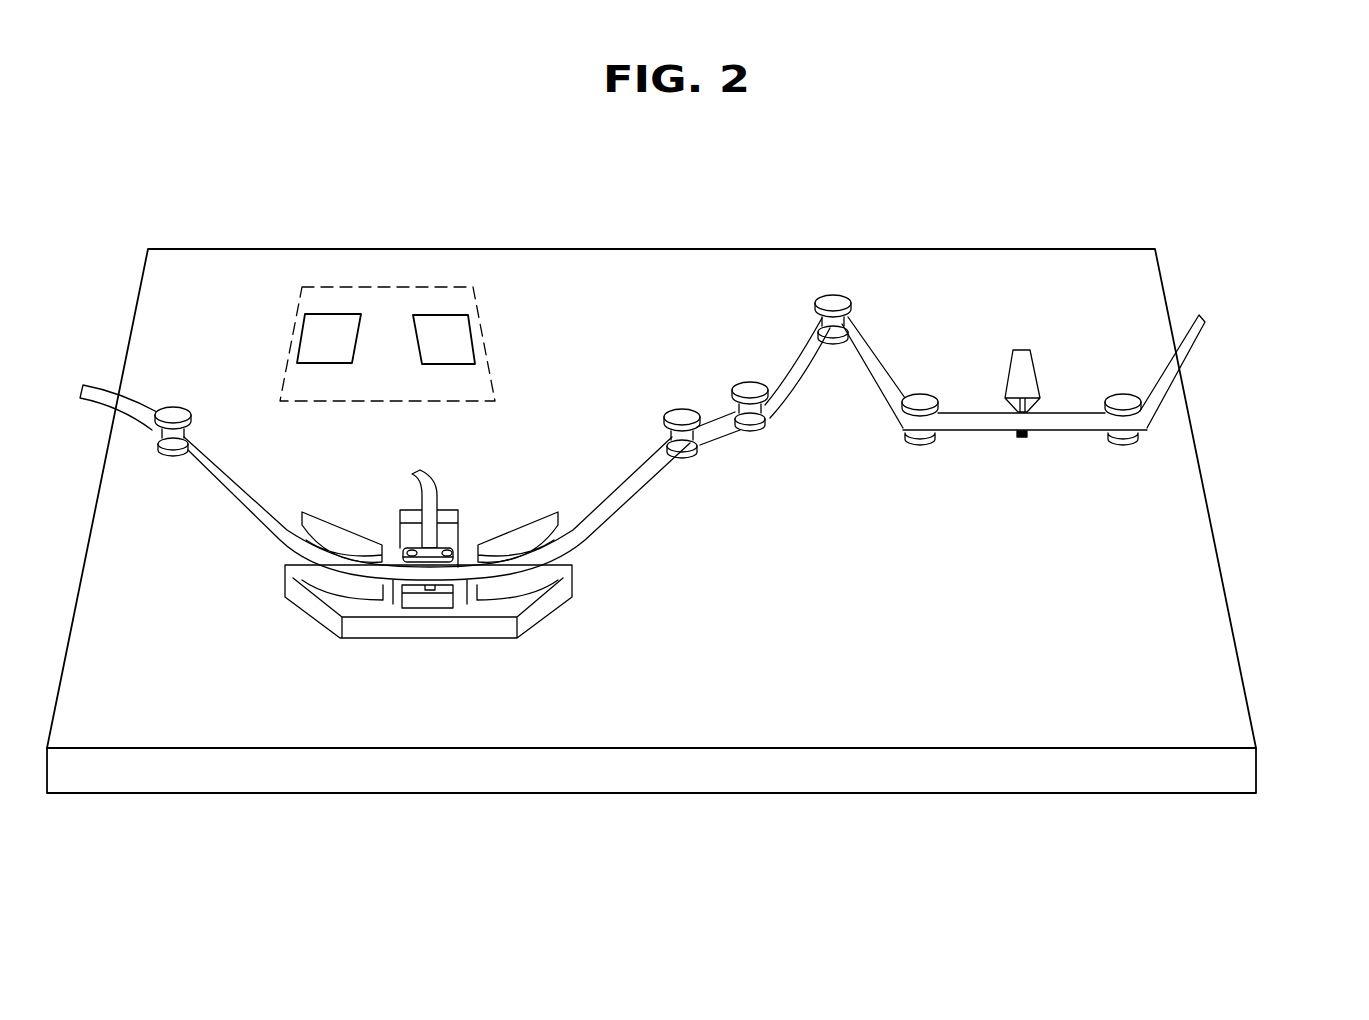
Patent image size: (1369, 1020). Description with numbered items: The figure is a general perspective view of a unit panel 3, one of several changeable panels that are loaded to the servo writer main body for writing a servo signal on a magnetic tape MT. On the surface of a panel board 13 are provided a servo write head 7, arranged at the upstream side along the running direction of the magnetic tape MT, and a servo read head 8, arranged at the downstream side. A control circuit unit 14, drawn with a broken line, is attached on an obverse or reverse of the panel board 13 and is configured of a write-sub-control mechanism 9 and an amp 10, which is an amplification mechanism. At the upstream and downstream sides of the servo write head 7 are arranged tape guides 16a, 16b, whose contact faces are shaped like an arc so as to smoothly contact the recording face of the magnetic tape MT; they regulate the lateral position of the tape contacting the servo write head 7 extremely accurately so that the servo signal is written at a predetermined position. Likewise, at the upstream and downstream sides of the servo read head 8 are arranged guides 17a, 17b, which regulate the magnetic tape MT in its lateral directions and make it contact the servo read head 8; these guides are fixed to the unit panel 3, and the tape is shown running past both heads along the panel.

The unit panel 3 is at (966, 211).
The servo write head 7 is at (445, 512).
The servo read head 8 is at (1023, 357).
The write-sub-control mechanism 9 is at (325, 330).
The amp 10 is at (450, 338).
The panel board 13 is at (1197, 506).
The control circuit unit 14 is at (435, 291).
The tape guide 16a is at (332, 525).
The tape guide 16b is at (505, 533).
The guide 17a is at (920, 400).
The guide 17b is at (1120, 400).
The magnetic tape MT is at (222, 479).